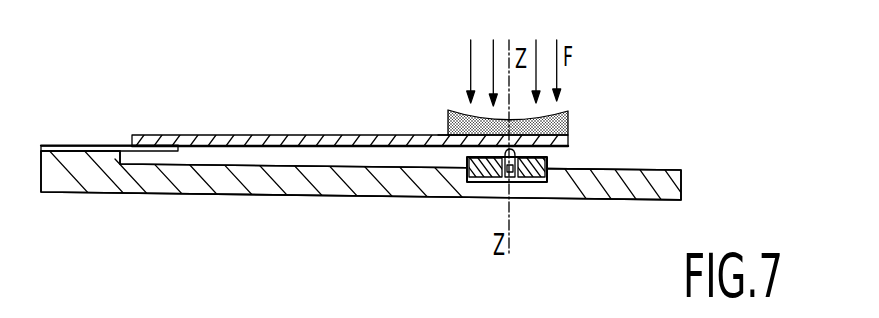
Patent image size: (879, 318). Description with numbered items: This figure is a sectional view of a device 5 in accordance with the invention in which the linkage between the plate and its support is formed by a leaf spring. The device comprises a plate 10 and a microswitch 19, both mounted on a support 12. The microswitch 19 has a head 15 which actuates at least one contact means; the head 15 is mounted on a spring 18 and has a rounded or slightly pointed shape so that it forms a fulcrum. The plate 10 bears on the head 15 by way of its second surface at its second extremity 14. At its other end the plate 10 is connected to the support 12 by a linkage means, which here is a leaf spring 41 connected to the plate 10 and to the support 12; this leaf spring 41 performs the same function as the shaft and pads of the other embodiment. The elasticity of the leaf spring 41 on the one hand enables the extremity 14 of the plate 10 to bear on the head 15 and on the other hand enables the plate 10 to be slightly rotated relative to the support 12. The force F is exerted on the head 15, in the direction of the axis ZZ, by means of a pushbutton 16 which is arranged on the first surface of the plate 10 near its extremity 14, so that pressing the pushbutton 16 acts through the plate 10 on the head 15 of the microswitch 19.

The force measuring device 5 is at (103, 215).
The plate 10 is at (283, 130).
The support 12 is at (613, 200).
The second extremity 14 is at (440, 124).
The head 15 is at (527, 180).
The pushbutton 16 is at (569, 121).
The spring 18 is at (507, 180).
The microswitch 19 is at (466, 182).
The leaf spring 41 is at (118, 146).